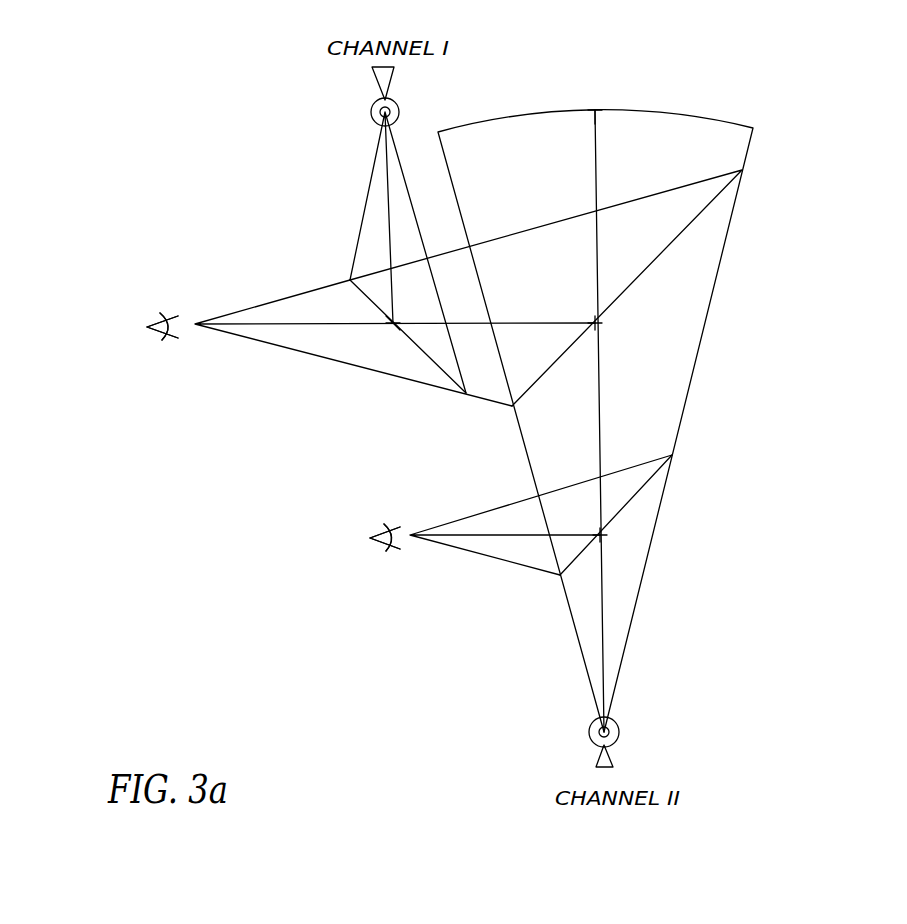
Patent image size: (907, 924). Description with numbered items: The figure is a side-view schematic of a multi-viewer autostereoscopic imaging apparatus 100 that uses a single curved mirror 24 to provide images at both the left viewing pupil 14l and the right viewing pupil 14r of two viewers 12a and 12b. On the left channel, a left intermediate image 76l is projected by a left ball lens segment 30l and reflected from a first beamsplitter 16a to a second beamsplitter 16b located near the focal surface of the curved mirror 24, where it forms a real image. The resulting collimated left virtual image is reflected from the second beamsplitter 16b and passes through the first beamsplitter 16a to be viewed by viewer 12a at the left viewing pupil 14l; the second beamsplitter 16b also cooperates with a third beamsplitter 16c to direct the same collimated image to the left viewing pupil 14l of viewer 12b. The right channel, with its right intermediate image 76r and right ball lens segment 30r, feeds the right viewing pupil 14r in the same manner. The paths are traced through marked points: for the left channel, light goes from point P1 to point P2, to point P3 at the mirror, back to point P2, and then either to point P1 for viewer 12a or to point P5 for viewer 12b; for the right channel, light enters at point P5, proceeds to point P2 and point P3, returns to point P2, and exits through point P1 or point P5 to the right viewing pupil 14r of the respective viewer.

The multi-viewer autostereoscopic imaging apparatus 100 is at (808, 613).
The curved mirror 24 is at (695, 116).
The left ball lens segment 30l is at (373, 118).
The right ball lens segment 30r is at (620, 728).
The left intermediate image 76l is at (382, 78).
The right intermediate image 76r is at (612, 757).
The viewer 12a is at (128, 358).
The viewer 12b is at (346, 571).
The left viewing pupil 14l is at (158, 322).
The right viewing pupil 14r is at (380, 533).
The first beamsplitter 16a is at (430, 358).
The second beamsplitter 16b is at (657, 260).
The third beamsplitter 16c is at (635, 497).
The point P1 is at (393, 324).
The point P2 is at (600, 325).
The point P3 is at (598, 117).
The point P5 is at (603, 536).